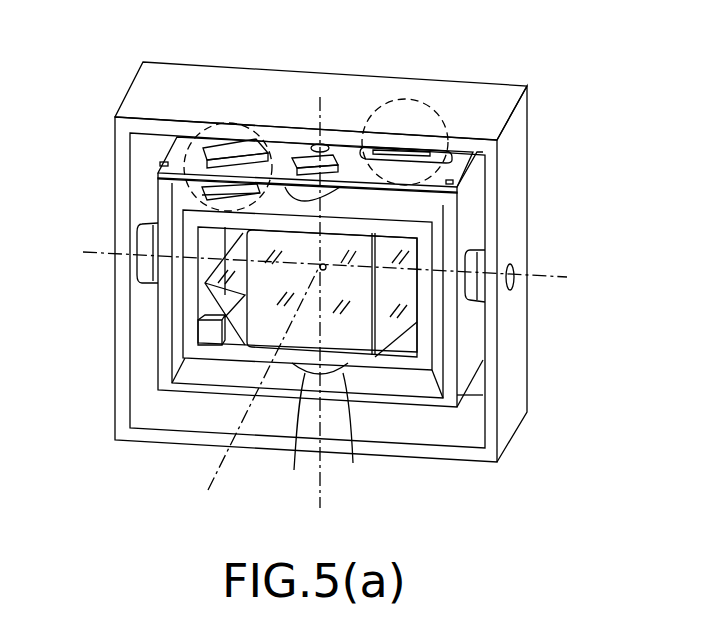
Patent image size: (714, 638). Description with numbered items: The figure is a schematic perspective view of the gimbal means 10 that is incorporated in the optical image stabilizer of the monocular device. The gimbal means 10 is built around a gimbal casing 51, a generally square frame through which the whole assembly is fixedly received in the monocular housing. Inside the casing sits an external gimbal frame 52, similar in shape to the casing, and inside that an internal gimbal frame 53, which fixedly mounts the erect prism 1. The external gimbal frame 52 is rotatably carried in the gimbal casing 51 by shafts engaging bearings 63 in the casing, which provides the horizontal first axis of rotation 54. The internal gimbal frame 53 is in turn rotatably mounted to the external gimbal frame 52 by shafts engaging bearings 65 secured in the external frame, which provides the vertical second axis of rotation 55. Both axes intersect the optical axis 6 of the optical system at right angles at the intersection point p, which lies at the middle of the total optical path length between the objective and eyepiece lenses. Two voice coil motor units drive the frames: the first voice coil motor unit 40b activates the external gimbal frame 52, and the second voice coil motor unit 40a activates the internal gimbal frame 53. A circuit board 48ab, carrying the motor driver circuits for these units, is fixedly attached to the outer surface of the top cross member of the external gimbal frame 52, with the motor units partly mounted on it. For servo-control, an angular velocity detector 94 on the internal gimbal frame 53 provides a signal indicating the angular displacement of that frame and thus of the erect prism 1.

The erect prism 1 is at (342, 325).
The optical axis 6 is at (212, 465).
The gimbal means 10 is at (352, 68).
The second voice coil motor unit 40a is at (235, 122).
The first voice coil motor unit 40b is at (408, 100).
The circuit board 48ab is at (462, 186).
The gimbal casing 51 is at (520, 198).
The external gimbal frame 52 is at (463, 328).
The internal gimbal frame 53 is at (412, 363).
The first axis of rotation 54 is at (548, 276).
The second axis of rotation 55 is at (318, 492).
The bearings 63 is at (138, 283).
The bearings 65 is at (285, 187).
The angular velocity detector 94 is at (216, 340).
The intersection point p is at (326, 270).